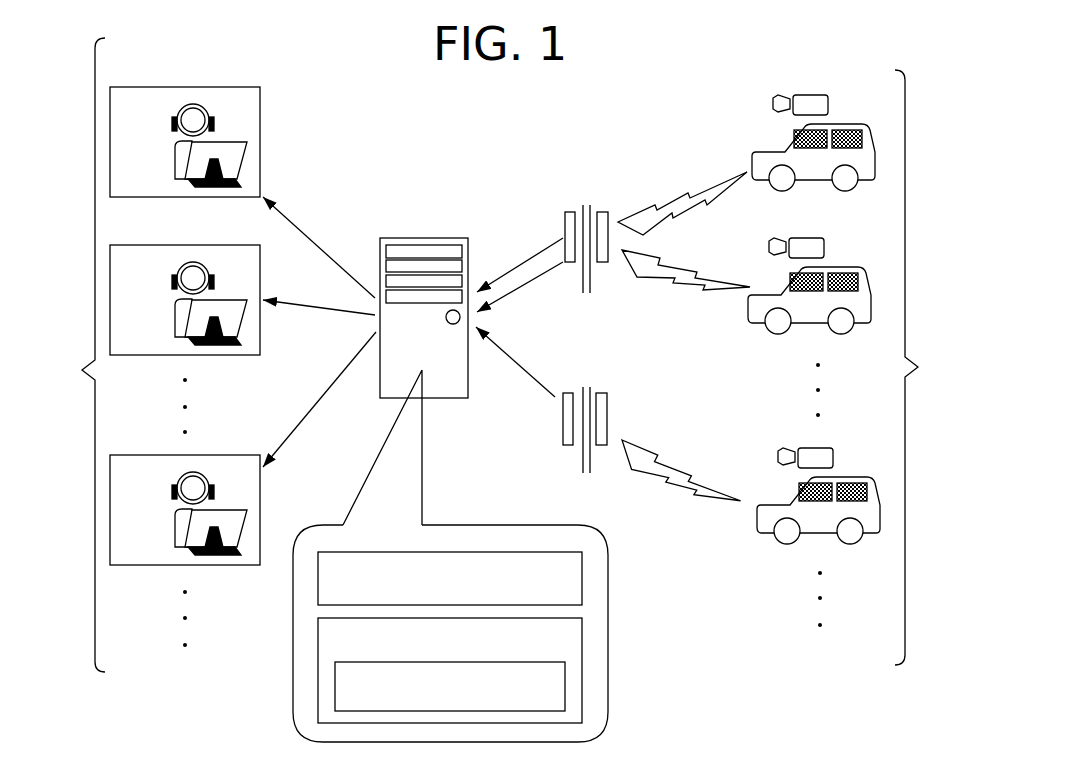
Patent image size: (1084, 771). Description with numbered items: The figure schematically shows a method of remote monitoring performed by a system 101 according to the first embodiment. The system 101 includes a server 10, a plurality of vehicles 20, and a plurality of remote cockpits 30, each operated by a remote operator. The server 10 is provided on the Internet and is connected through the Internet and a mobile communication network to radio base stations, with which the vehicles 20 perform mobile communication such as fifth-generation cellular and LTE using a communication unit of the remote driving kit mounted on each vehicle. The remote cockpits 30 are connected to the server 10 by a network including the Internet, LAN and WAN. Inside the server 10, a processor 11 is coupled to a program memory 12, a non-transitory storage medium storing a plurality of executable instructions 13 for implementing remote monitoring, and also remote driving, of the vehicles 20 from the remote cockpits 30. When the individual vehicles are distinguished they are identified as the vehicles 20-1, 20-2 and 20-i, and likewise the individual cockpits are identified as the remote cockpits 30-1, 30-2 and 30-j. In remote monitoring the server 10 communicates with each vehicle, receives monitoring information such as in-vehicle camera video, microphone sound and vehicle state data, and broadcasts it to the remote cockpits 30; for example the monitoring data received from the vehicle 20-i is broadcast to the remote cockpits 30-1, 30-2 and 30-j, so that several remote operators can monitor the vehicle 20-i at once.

The system 101 is at (437, 160).
The server 10 is at (420, 238).
The processor 11 is at (563, 552).
The program memory 12 is at (565, 618).
The instructions 13 is at (565, 662).
The vehicles 20 is at (852, 367).
The vehicle 20-1 is at (866, 110).
The vehicle 20-2 is at (858, 255).
The vehicle 20-i is at (872, 467).
The remote cockpits 30 is at (152, 355).
The remote cockpit 30-1 is at (197, 86).
The remote cockpit 30-2 is at (197, 244).
The remote cockpit 30-j is at (187, 454).